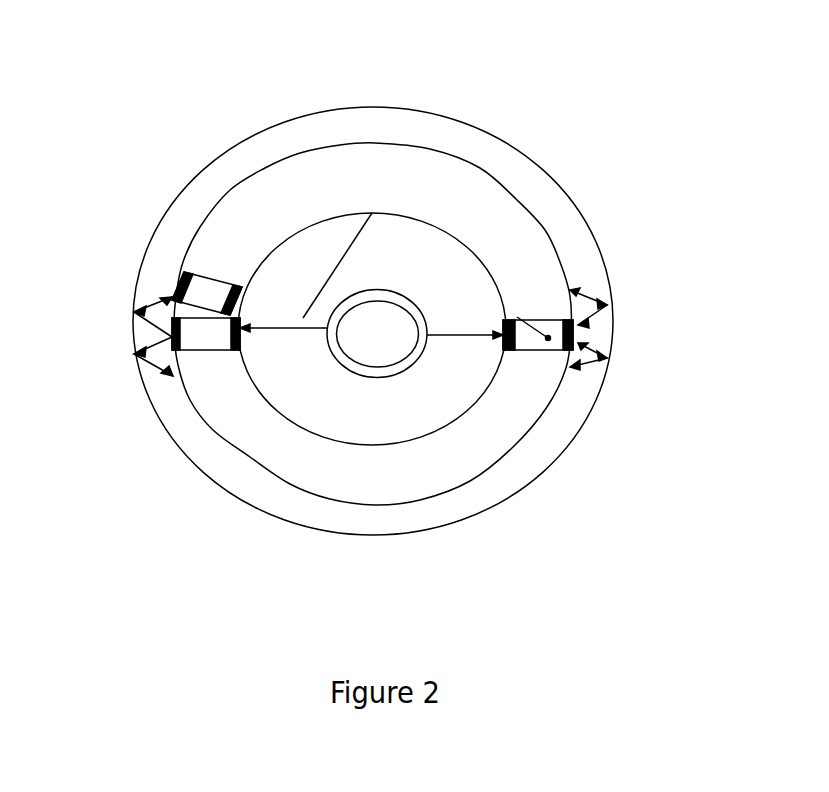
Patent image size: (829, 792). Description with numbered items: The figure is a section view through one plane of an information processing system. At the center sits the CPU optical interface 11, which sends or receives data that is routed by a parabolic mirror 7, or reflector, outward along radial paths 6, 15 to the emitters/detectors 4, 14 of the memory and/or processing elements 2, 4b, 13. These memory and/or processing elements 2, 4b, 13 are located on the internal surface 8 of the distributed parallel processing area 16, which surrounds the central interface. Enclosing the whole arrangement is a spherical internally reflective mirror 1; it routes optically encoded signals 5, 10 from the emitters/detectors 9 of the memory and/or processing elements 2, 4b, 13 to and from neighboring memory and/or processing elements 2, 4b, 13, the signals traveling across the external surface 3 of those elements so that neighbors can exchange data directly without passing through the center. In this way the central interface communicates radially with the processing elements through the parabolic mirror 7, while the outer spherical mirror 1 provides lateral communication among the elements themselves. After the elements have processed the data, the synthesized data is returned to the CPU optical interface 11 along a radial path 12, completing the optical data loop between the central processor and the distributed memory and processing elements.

The spherical internally reflective mirror 1 is at (163, 222).
The memory and/or processing element 2 is at (235, 290).
The external surface 3 is at (287, 162).
The emitter/detector 4 is at (500, 318).
The memory and/or processing element 4b is at (517, 317).
The optically encoded signal 5 is at (608, 305).
The radial path 6 is at (470, 337).
The parabolic mirror 7 is at (388, 380).
The internal surface 8 is at (327, 335).
The emitter/detector 9 is at (320, 318).
The optically encoded signal 10 is at (134, 312).
The CPU optical interface 11 is at (381, 306).
The radial path 12 is at (376, 300).
The memory and/or processing element 13 is at (205, 352).
The emitter/detector 14 is at (252, 330).
The radial path 15 is at (273, 332).
The distributed parallel processing area 16 is at (487, 435).